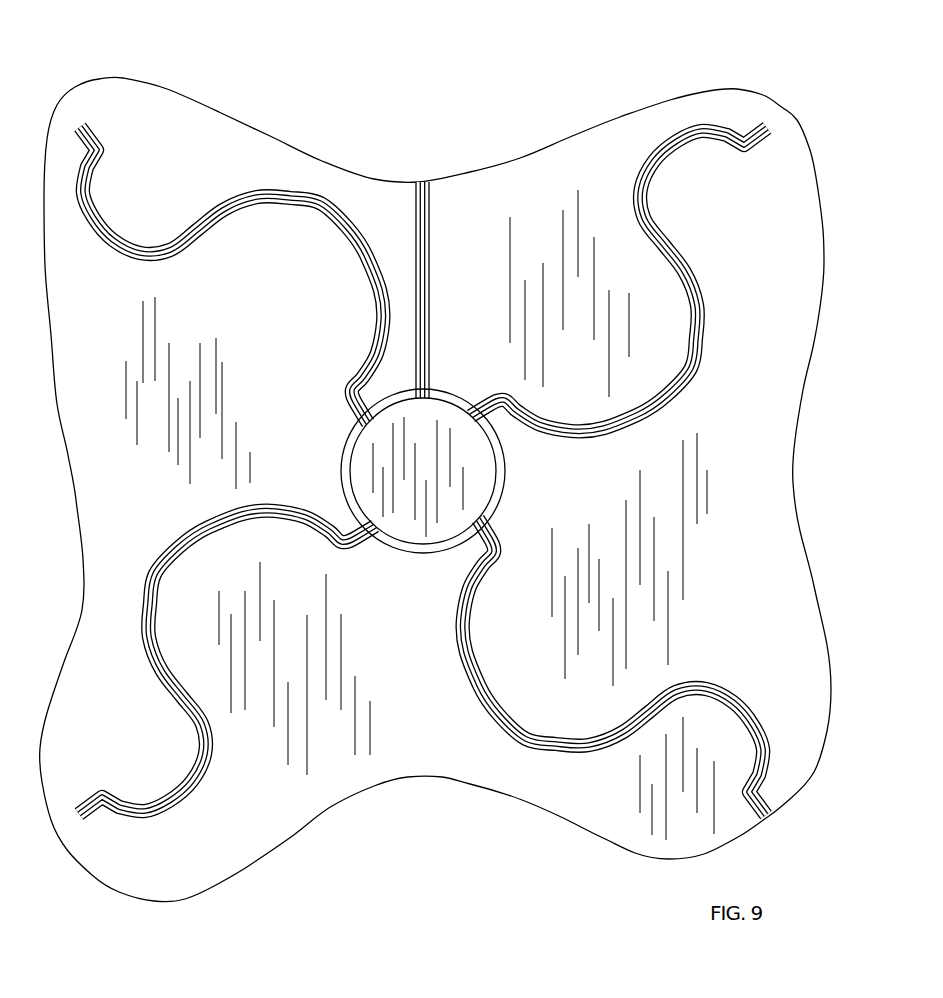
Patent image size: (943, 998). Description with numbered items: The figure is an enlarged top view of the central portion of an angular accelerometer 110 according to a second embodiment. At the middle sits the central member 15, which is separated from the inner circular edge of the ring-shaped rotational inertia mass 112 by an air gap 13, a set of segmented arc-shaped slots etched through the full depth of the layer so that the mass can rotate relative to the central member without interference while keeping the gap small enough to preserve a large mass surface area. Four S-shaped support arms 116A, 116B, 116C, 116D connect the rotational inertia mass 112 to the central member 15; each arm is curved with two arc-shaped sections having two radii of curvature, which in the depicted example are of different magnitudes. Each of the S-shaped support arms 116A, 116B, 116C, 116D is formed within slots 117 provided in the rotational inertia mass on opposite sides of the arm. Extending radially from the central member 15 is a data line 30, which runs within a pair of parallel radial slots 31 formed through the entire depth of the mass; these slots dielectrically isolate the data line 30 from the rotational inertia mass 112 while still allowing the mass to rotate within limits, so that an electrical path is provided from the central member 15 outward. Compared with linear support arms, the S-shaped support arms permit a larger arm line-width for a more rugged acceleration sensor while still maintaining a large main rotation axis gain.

The angular accelerometer 110 is at (452, 458).
The rotational inertia mass 112 is at (792, 347).
The S-shaped support arm 116A is at (93, 207).
The S-shaped support arm 116B is at (690, 357).
The S-shaped support arm 116C is at (738, 693).
The S-shaped support arm 116D is at (198, 792).
The slots 117 is at (423, 471).
The data line 30 is at (428, 212).
The radial slots 31 is at (430, 287).
The central member 15 is at (478, 462).
The air gap 13 is at (413, 549).